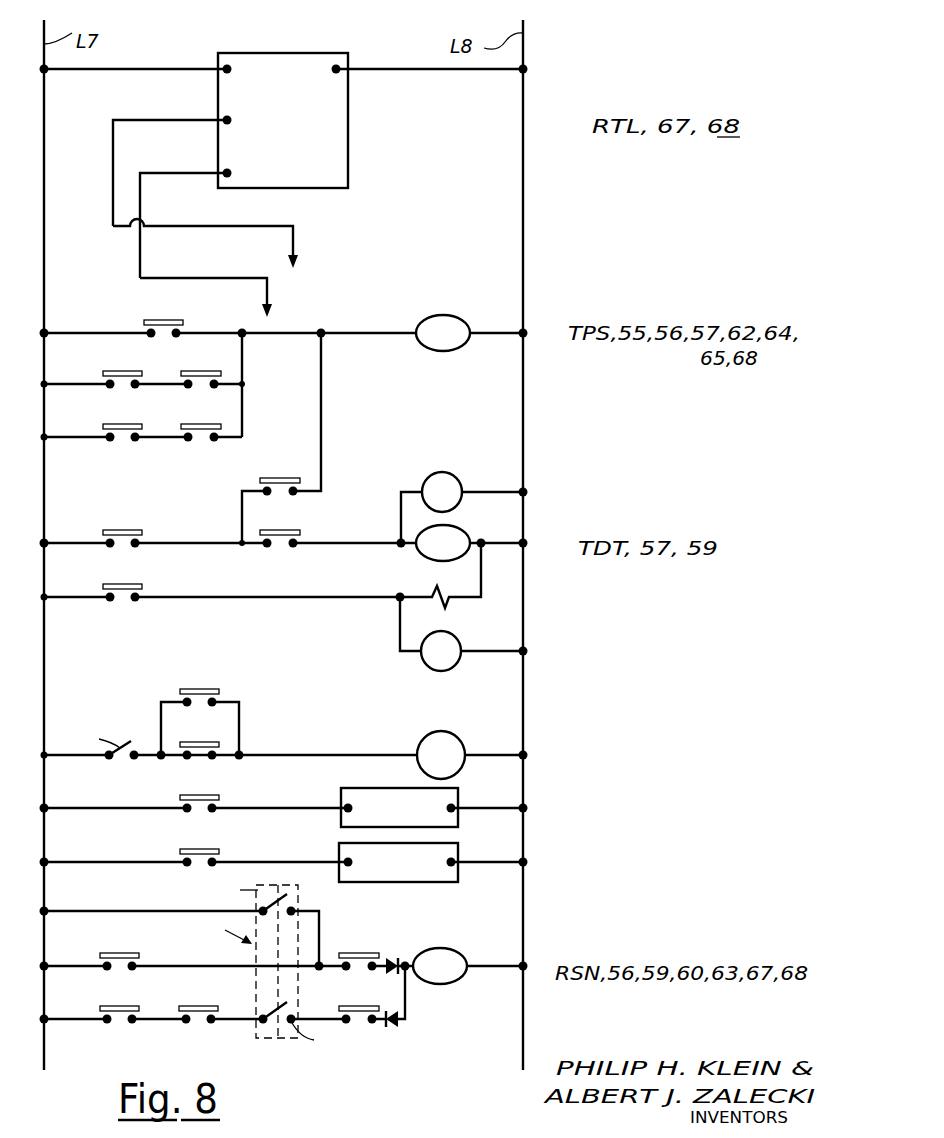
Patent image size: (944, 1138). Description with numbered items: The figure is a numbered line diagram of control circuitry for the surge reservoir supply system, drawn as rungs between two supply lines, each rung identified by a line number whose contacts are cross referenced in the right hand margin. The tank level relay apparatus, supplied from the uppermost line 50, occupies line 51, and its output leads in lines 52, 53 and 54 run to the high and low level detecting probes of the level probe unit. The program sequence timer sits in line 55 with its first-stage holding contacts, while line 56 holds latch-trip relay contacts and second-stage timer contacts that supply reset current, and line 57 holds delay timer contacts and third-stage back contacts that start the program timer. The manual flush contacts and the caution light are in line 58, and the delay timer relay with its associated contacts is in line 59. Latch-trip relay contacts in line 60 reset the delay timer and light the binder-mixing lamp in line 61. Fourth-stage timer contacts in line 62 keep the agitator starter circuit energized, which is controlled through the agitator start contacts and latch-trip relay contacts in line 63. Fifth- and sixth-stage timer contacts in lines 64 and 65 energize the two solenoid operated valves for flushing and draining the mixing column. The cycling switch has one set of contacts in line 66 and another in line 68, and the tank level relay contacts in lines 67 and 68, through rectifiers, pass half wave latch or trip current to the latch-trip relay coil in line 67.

The circuit line 50 is at (563, 72).
The circuit line 51 is at (563, 125).
The circuit line 52 is at (563, 179).
The circuit line 53 is at (563, 232).
The circuit line 54 is at (563, 286).
The circuit line 55 is at (563, 336).
The circuit line 56 is at (563, 387).
The circuit line 57 is at (563, 440).
The circuit line 58 is at (563, 495).
The circuit line 59 is at (563, 546).
The circuit line 60 is at (563, 600).
The circuit line 61 is at (563, 654).
The circuit line 62 is at (563, 705).
The circuit line 63 is at (563, 758).
The circuit line 64 is at (563, 811).
The circuit line 65 is at (563, 865).
The circuit line 66 is at (563, 914).
The circuit line 67 is at (563, 969).
The circuit line 68 is at (563, 1022).